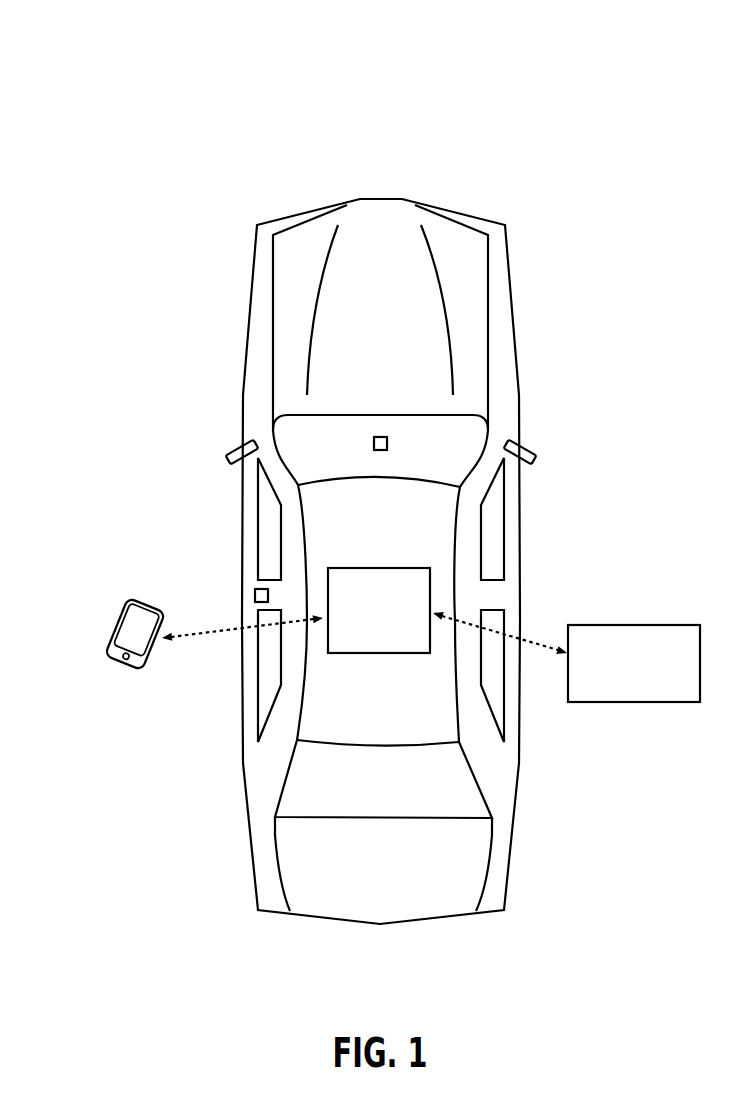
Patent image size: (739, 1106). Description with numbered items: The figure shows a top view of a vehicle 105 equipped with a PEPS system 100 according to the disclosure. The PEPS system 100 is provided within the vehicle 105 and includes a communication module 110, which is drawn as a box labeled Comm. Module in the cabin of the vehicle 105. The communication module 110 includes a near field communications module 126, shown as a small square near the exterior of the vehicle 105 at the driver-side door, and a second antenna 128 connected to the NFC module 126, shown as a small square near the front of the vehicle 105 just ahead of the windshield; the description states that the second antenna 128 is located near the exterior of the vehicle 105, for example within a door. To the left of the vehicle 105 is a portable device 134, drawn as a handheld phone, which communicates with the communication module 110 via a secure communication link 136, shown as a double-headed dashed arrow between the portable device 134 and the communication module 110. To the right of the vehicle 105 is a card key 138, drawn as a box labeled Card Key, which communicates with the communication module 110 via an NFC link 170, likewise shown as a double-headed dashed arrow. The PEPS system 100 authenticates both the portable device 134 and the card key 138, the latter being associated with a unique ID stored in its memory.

The PEPS system 100 is at (148, 46).
The vehicle 105 is at (402, 199).
The communication module 110 is at (355, 568).
The near field communications (NFC) module 126 is at (254, 595).
The second antenna 128 is at (380, 437).
The portable device 134 is at (115, 630).
The secure communication link 136 is at (216, 637).
The card key 138 is at (637, 625).
The NFC link 170 is at (542, 642).